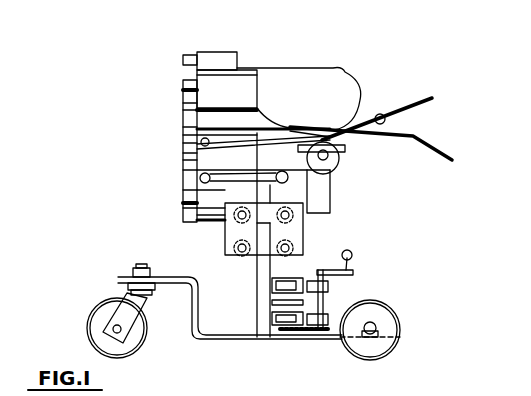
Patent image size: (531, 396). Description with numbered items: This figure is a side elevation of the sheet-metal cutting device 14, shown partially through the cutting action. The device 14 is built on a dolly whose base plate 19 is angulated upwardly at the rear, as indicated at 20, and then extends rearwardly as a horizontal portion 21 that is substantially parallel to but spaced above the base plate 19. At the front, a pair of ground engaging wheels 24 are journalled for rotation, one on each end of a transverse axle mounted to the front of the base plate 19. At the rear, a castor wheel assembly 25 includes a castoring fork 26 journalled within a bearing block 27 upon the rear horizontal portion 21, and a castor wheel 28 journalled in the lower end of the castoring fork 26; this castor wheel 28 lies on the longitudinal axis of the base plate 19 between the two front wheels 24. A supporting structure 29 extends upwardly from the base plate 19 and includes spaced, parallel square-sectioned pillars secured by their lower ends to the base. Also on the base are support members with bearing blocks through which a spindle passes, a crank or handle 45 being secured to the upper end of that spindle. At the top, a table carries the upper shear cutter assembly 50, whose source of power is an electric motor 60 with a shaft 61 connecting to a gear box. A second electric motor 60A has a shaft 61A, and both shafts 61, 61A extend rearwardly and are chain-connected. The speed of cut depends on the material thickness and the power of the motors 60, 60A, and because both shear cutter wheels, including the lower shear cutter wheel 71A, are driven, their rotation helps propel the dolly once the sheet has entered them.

The device 14 is at (250, 359).
The base plate 19 is at (190, 357).
The upwardly angulated portion 20 is at (213, 304).
The rear horizontal portion 21 is at (230, 291).
The ground engaging wheels 24 is at (389, 330).
The castor wheel assembly 25 is at (108, 301).
The castoring fork 26 is at (157, 299).
The bearing block 27 is at (133, 260).
The castor wheel 28 is at (144, 318).
The supporting structure 29 is at (238, 235).
The crank or handle 45 is at (330, 286).
The upper shear cutter assembly 50 is at (304, 81).
The electric motor 60 is at (256, 119).
The electric motor 60A is at (184, 225).
The shaft 61 is at (173, 149).
The shaft 61A is at (170, 196).
The lower shear cutter wheel 71A is at (342, 177).